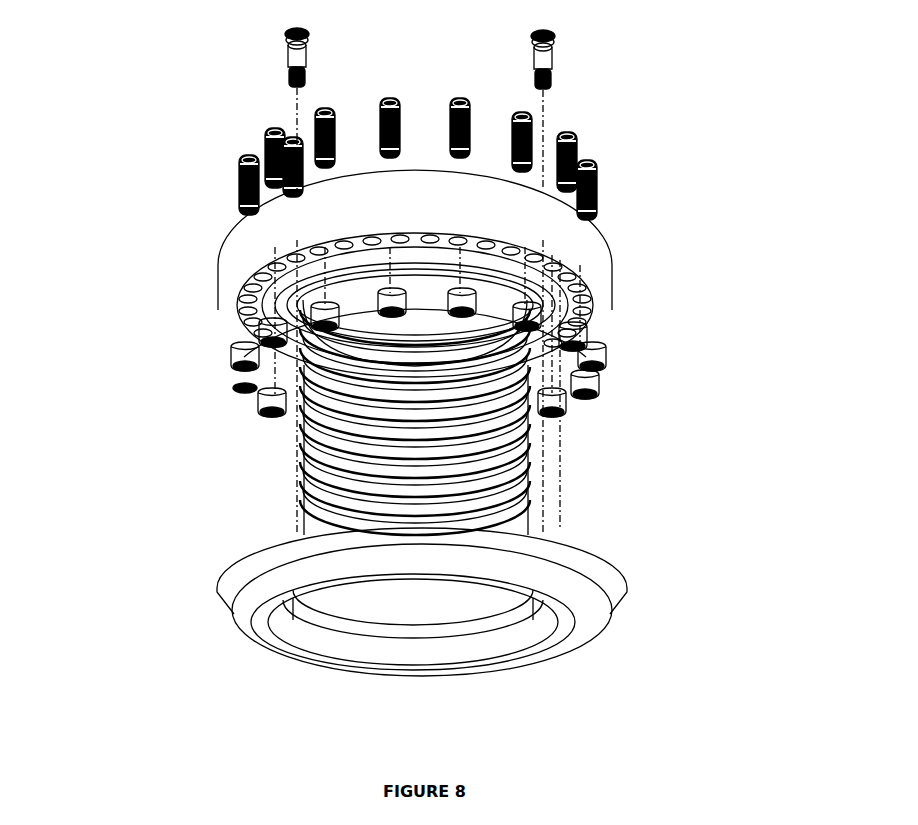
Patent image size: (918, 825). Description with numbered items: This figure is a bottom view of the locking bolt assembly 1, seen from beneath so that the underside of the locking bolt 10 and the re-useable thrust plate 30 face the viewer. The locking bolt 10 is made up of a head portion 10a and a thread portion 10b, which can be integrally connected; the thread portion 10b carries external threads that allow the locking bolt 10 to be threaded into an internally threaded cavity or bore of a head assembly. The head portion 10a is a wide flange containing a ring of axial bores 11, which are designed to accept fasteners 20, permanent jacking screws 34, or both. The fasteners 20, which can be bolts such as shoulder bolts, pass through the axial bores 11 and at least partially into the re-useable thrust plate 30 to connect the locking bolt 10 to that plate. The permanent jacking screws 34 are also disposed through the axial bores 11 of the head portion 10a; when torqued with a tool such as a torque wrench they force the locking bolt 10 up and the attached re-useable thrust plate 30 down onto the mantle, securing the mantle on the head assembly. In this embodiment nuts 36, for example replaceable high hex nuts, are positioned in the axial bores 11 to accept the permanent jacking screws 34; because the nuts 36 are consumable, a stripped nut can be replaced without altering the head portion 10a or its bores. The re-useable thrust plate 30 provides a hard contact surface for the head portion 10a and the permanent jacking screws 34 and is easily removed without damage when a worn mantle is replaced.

The locking bolt assembly 1 is at (200, 84).
The locking bolt 10 is at (668, 391).
The head portion 10a is at (590, 242).
The thread portion 10b is at (505, 465).
The axial bores 11 is at (250, 292).
The fasteners 20 is at (552, 54).
The re-useable thrust plate 30 is at (592, 583).
The permanent jacking screws 34 is at (597, 183).
The nuts 36 is at (240, 353).